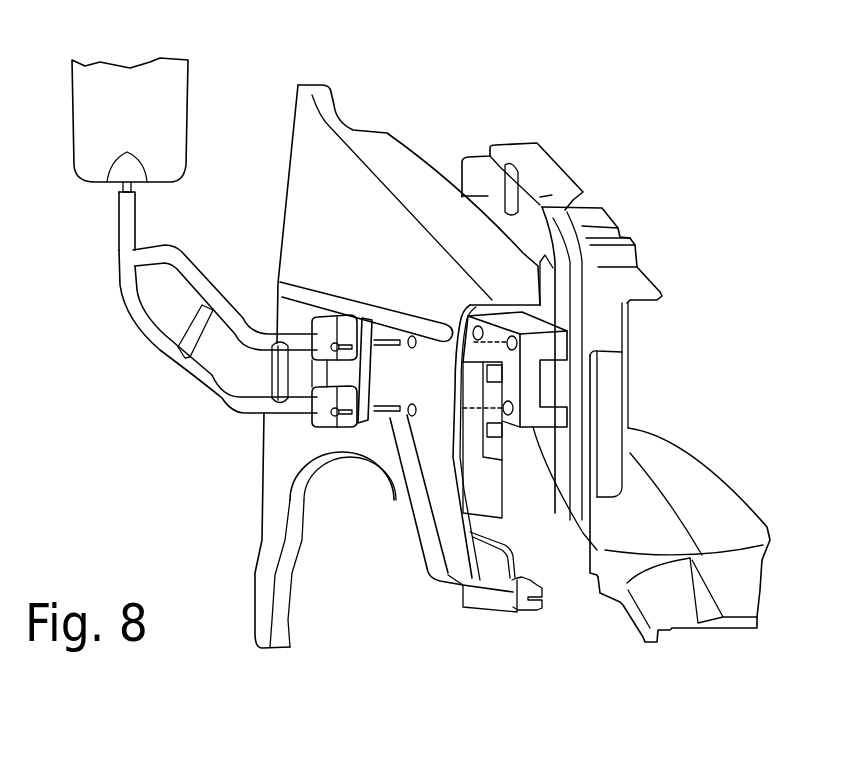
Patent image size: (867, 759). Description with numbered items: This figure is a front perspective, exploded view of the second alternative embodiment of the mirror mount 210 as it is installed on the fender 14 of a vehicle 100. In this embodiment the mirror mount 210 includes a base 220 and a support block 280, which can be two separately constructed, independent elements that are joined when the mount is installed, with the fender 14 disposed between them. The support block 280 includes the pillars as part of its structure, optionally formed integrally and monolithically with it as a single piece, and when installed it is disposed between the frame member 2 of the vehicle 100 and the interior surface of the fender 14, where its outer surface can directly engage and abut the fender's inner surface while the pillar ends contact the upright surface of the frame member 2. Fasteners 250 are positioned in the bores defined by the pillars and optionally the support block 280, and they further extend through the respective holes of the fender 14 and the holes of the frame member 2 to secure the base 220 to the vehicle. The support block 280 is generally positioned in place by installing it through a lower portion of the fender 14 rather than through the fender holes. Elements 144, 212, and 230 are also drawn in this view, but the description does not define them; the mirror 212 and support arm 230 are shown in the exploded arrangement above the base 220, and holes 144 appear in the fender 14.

The frame member 2 is at (617, 403).
The fender 14 is at (317, 211).
The vehicle 100 is at (362, 97).
The mounting holes 144 is at (411, 335).
The mirror mount 210 is at (205, 492).
The mirror housing 212 is at (83, 172).
The base 220 is at (363, 428).
The tubular support bracket 230 is at (170, 360).
The fasteners 250 is at (393, 343).
The support block 280 is at (542, 420).